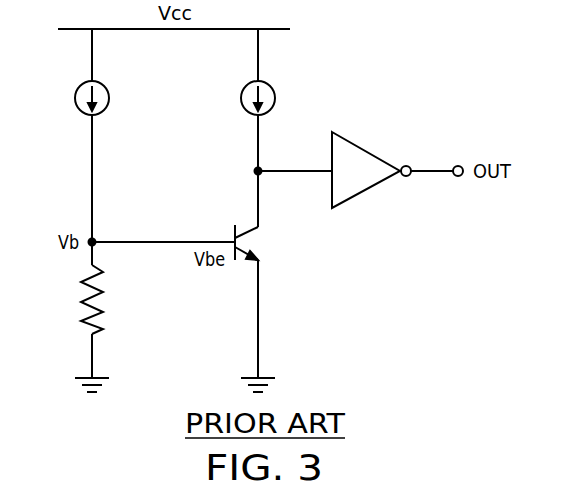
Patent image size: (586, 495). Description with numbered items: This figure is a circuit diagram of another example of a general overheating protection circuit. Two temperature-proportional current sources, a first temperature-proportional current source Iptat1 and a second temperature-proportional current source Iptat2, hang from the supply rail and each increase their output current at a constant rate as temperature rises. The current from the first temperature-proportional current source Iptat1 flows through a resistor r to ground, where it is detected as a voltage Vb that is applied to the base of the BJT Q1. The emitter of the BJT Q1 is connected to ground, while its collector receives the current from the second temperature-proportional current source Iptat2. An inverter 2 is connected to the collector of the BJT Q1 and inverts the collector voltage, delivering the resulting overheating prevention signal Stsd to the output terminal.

The inverter 2 is at (370, 146).
The BJT Q1 is at (260, 242).
The resistor r is at (101, 299).
The first temperature-proportional current source Iptat1 is at (65, 98).
The second temperature-proportional current source Iptat2 is at (231, 98).